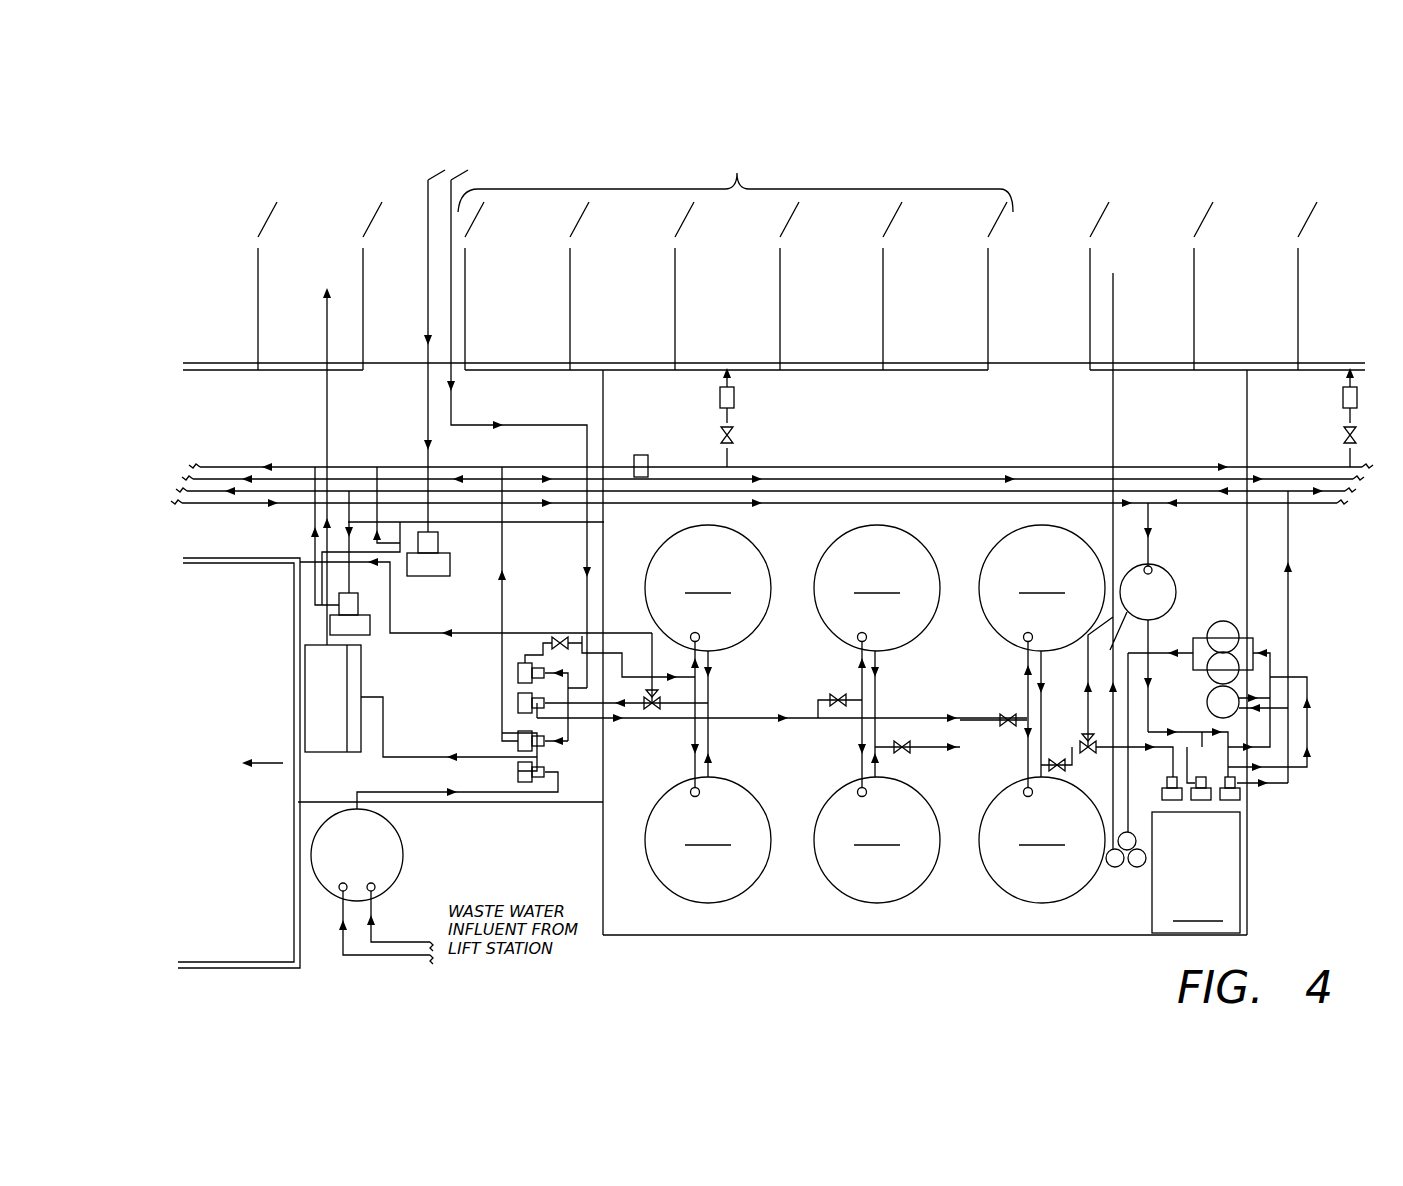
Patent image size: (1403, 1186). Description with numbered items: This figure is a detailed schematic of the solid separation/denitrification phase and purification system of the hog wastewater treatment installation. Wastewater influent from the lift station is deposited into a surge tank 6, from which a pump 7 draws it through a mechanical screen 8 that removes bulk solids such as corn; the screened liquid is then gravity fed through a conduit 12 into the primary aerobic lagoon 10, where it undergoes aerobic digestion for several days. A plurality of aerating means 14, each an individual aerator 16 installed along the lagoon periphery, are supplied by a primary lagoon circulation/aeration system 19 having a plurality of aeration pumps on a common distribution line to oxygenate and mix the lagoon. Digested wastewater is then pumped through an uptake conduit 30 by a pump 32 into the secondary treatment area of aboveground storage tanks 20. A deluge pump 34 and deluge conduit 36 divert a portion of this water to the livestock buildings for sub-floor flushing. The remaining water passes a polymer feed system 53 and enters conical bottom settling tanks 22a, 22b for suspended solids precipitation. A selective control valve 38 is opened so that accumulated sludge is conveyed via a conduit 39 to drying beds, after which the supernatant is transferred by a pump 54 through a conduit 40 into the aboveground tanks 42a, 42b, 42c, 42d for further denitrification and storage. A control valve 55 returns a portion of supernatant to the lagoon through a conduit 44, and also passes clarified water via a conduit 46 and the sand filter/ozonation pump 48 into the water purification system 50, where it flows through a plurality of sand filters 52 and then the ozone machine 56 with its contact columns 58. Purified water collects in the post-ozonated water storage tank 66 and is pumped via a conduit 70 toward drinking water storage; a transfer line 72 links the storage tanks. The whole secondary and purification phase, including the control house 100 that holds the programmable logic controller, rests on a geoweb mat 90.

The surge tank 6 is at (366, 864).
The pump 7 is at (528, 783).
The mechanical screen 8 is at (337, 704).
The aerobic lagoon 10 is at (1220, 250).
The conduit 12 is at (327, 334).
The aerating means 14 is at (735, 259).
The aerator 16 is at (990, 284).
The primary lagoon circulation/aeration system 19 is at (425, 595).
The aboveground storage tanks 20 is at (848, 918).
The conical bottom settling tank 22a is at (708, 840).
The conical bottom settling tank 22b is at (708, 656).
The uptake conduit 30 is at (451, 318).
The pump 32 is at (518, 665).
The deluge pump 34 is at (518, 741).
The deluge conduit 36 is at (905, 467).
The selective control valve 38 is at (653, 712).
The conduit 39 is at (533, 633).
The conduit 40 is at (762, 720).
The aboveground tank 42a is at (877, 840).
The aboveground tank 42b is at (877, 656).
The aboveground tank 42c is at (1042, 840).
The aboveground tank 42d is at (1042, 588).
The conduit 44 is at (1113, 315).
The conduit 46 is at (1135, 748).
The sand filter/ozonation pump 48 is at (1172, 799).
The water purification system 50 is at (1303, 648).
The sand filters 52 is at (1233, 610).
The polymer feed system 53 is at (557, 638).
The pump 54 is at (518, 703).
The control valve 55 is at (1086, 740).
The ozone machine 56 is at (1108, 883).
The contact columns 58 is at (1146, 857).
The post-ozonated water storage tank 66 is at (1148, 617).
The conduit 70 is at (1288, 525).
The tank transfer line 72 is at (1110, 655).
The geoweb mat 90 is at (925, 937).
The control house 100 is at (1196, 872).